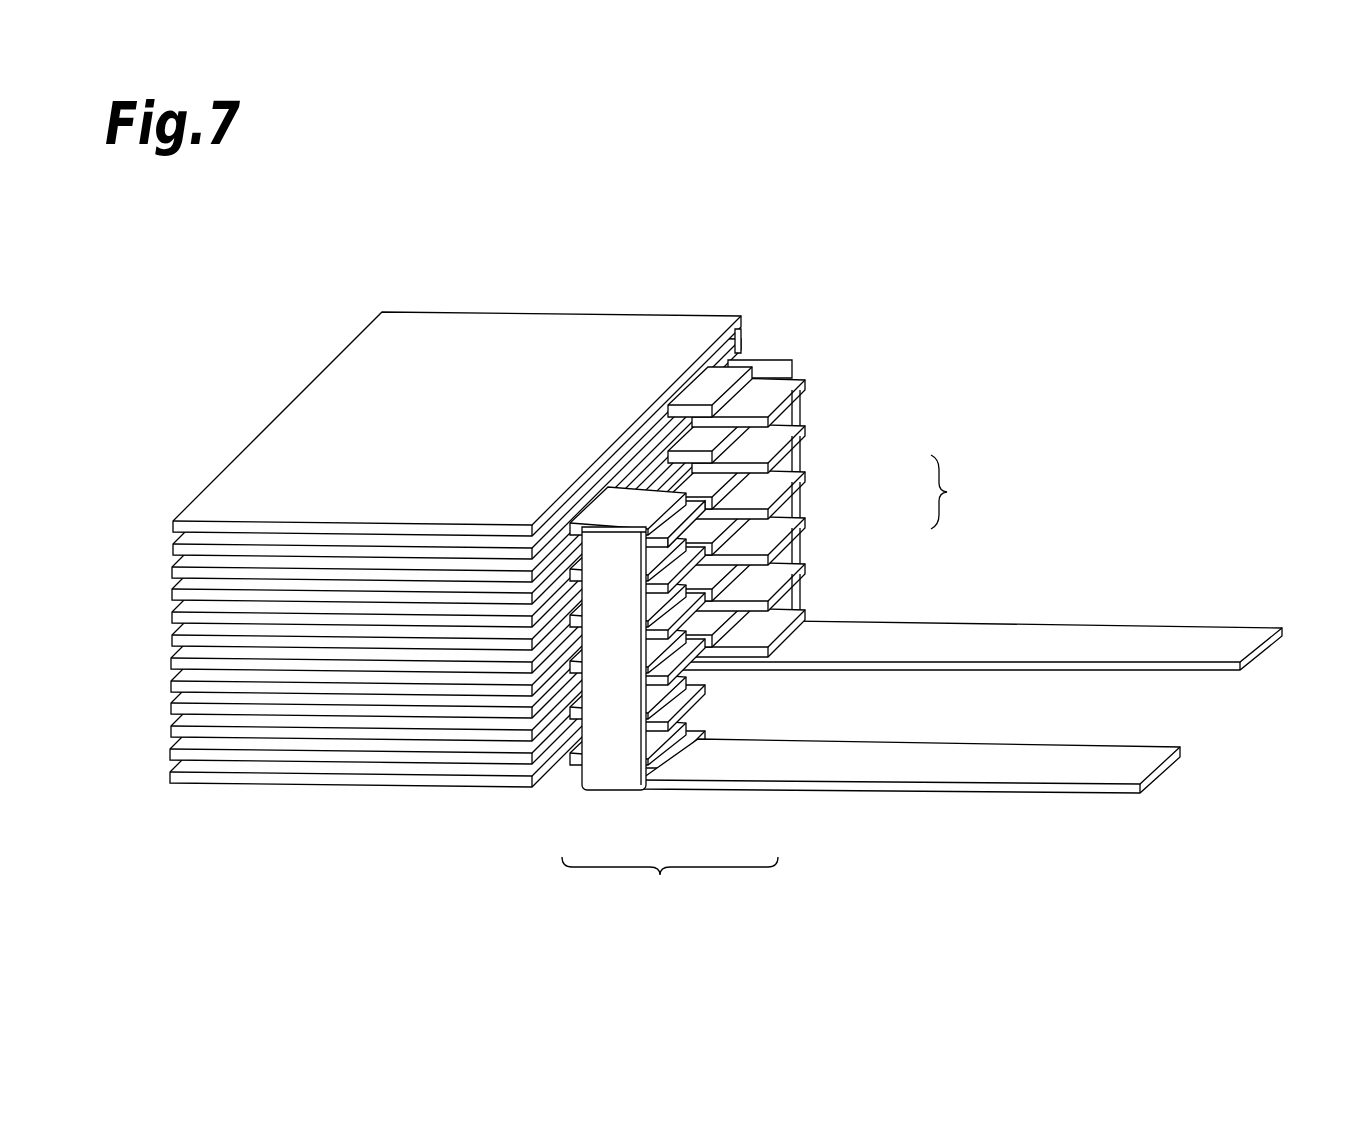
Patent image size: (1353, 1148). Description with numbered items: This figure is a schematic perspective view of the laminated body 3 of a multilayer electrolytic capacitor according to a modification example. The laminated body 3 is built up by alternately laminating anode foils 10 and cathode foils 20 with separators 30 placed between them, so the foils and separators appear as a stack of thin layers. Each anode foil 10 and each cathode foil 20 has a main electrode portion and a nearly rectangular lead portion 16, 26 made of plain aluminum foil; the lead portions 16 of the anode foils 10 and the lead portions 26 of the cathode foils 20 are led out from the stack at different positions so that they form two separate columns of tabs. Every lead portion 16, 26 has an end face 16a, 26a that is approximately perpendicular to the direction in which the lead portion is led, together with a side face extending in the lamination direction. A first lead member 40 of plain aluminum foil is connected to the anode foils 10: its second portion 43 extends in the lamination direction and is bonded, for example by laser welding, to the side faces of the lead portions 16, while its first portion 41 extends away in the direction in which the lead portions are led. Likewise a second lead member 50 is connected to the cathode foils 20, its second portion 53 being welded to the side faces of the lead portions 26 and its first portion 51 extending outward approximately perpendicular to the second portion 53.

The laminated body 3 is at (726, 541).
The anode foil 10 is at (558, 538).
The lead portion 16 is at (722, 581).
The end face 16a is at (688, 524).
The cathode foil 20 is at (736, 345).
The lead portion 26 is at (805, 475).
The end face 26a is at (808, 388).
The separator 30 is at (428, 345).
The first lead member 40 is at (871, 720).
The first portion 41 is at (758, 772).
The second portion 43 is at (612, 753).
The second lead member 50 is at (888, 500).
The first portion 51 is at (888, 616).
The second portion 53 is at (790, 463).